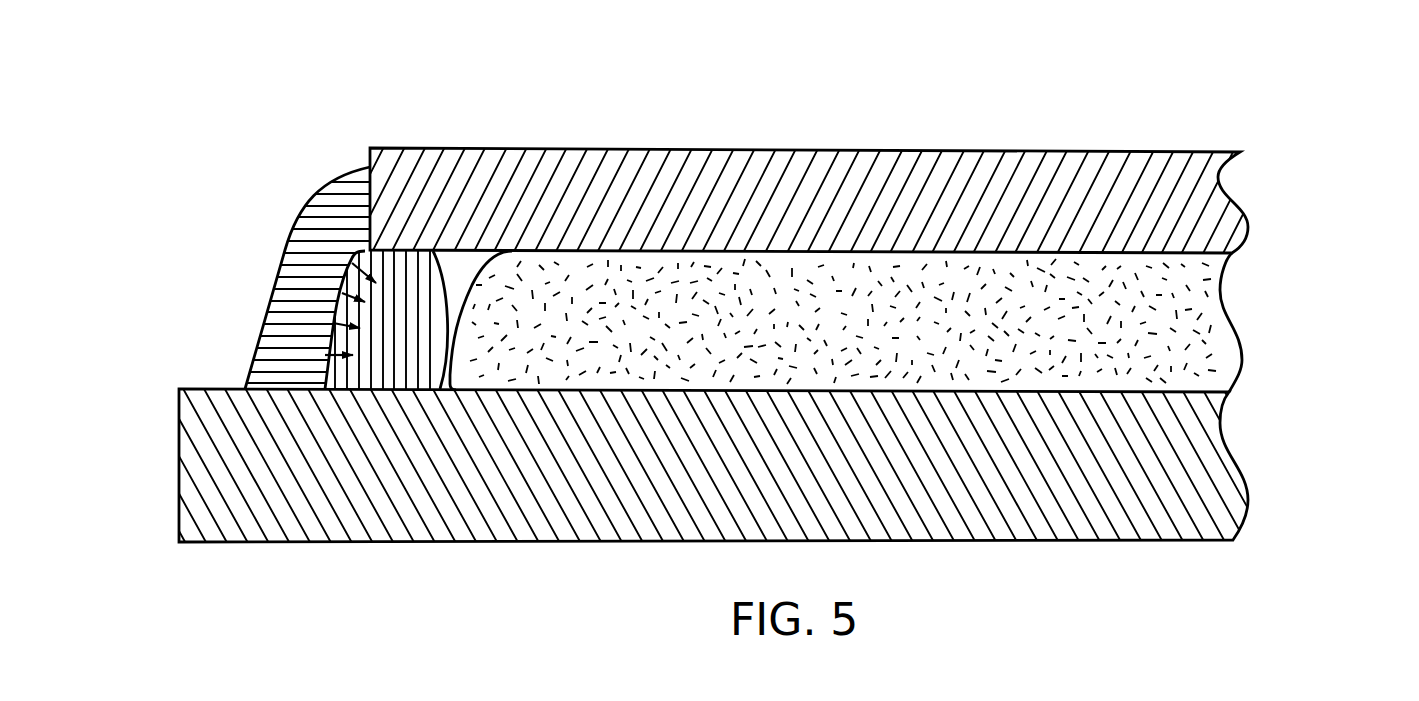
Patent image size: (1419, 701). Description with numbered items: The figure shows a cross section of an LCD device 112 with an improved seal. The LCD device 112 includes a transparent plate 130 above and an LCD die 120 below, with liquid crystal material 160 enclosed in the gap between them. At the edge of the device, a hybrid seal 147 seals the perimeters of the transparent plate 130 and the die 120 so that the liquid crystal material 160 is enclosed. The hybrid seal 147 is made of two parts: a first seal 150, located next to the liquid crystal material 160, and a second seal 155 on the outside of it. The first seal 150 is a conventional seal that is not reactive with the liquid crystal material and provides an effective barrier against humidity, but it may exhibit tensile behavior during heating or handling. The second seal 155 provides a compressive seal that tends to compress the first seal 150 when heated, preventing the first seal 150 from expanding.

The LCD device 112 is at (402, 82).
The LCD die 120 is at (1243, 478).
The transparent plate 130 is at (1244, 213).
The hybrid seal 147 is at (242, 242).
The first seal 150 is at (365, 252).
The second seal 155 is at (263, 293).
The liquid crystal material 160 is at (1240, 333).